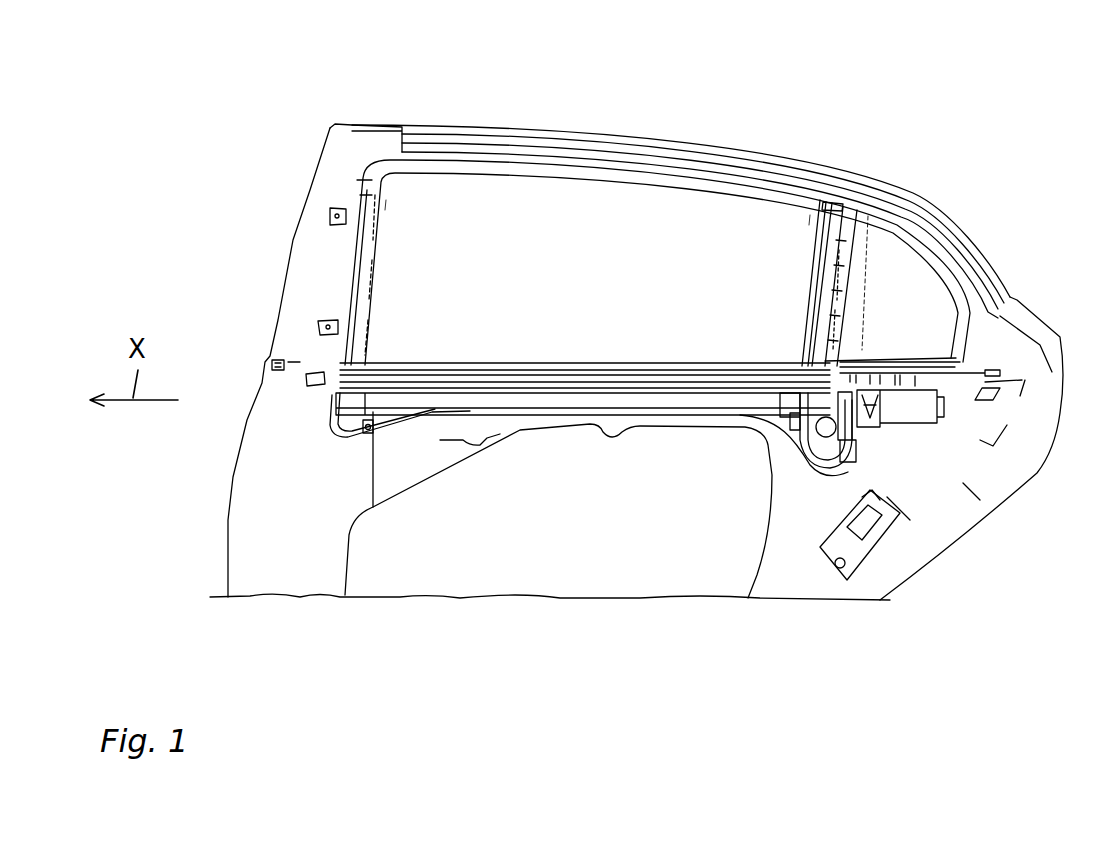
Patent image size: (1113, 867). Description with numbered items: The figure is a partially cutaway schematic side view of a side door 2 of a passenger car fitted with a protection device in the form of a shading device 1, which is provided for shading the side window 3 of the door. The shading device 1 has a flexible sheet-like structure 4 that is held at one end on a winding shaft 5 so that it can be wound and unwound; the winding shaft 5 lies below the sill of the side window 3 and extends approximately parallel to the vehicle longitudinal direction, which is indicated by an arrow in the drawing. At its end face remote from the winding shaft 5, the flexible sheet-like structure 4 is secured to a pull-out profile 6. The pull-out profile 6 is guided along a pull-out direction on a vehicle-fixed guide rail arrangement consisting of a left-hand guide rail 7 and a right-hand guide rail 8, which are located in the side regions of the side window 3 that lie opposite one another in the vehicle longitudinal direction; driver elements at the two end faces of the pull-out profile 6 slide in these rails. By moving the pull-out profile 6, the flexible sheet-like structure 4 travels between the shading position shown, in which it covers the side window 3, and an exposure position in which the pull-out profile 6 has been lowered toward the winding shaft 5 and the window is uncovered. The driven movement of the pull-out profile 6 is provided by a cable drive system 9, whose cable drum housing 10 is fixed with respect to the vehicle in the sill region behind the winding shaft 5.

The shading device 1 is at (900, 128).
The side door 2 is at (300, 273).
The side window 3 is at (905, 278).
The flexible sheet-like structure 4 is at (448, 248).
The winding shaft 5 is at (566, 452).
The pull-out profile 6 is at (612, 176).
The left-hand guide rail 7 is at (356, 207).
The right-hand guide rail 8 is at (845, 226).
The cable drive system 9 is at (786, 468).
The cable drum housing 10 is at (897, 437).